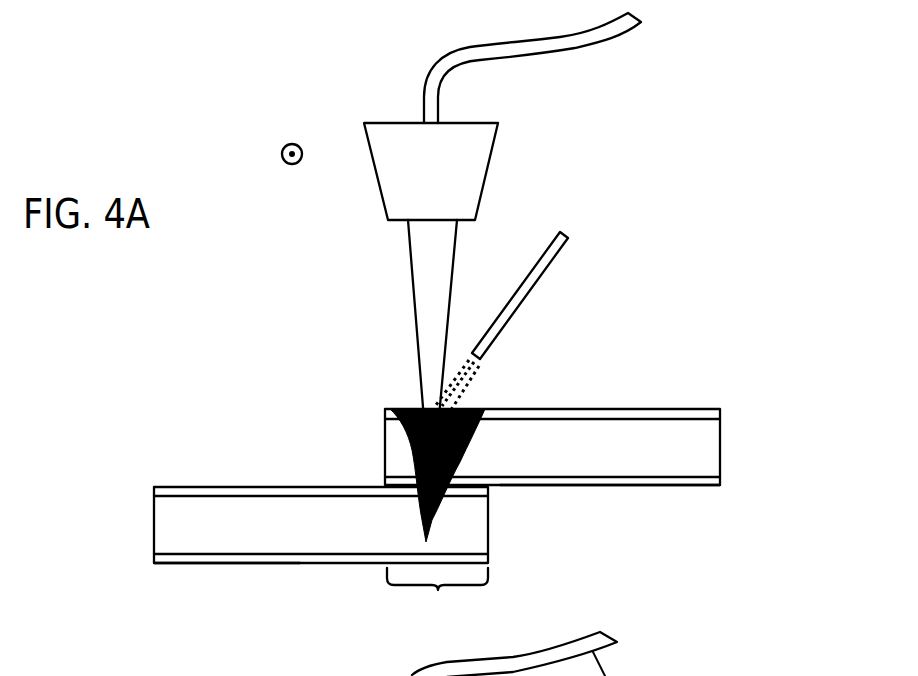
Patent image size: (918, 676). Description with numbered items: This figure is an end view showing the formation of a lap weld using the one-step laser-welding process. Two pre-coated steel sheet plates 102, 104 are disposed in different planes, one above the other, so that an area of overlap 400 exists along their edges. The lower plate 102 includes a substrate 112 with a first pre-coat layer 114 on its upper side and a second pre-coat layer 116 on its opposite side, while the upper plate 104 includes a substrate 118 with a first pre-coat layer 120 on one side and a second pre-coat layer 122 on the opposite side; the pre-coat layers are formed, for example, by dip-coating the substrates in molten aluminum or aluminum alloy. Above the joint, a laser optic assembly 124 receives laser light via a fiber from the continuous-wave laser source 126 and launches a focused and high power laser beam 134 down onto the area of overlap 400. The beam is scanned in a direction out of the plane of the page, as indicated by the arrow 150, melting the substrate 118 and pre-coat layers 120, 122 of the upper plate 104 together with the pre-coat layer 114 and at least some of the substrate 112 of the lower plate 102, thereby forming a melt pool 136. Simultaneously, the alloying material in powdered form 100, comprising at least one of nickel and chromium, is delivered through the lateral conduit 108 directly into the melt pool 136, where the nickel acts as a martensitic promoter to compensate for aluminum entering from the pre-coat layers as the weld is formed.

The alloying material in powdered form 100 is at (544, 372).
The pre-coated steel sheet plate 102 is at (321, 468).
The pre-coated steel sheet plate 104 is at (571, 386).
The lateral conduit 108 is at (597, 295).
The substrate 112 is at (321, 591).
The first pre-coat layer 114 is at (260, 477).
The second pre-coat layer 116 is at (186, 618).
The substrate 118 is at (579, 520).
The first pre-coat layer 120 is at (625, 402).
The second pre-coat layer 122 is at (610, 537).
The laser optic assembly 124 is at (500, 171).
The laser source 126 is at (561, 78).
The focused and high power laser beam 134 is at (381, 351).
The melt pool 136 is at (405, 431).
The arrow 150 is at (252, 211).
The area of overlap 400 is at (437, 595).